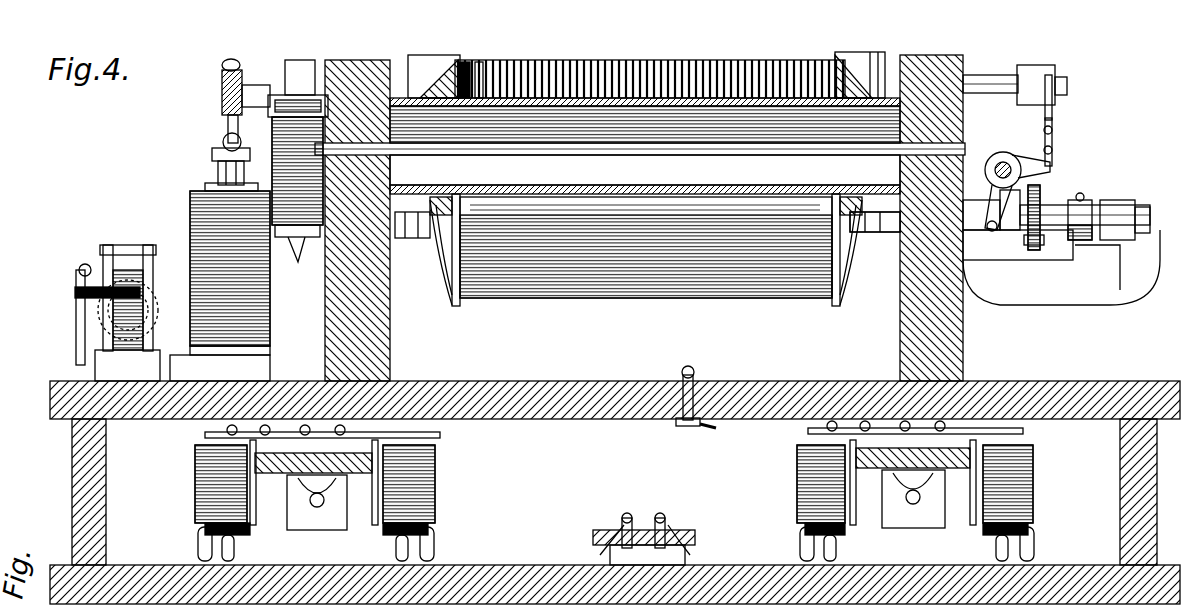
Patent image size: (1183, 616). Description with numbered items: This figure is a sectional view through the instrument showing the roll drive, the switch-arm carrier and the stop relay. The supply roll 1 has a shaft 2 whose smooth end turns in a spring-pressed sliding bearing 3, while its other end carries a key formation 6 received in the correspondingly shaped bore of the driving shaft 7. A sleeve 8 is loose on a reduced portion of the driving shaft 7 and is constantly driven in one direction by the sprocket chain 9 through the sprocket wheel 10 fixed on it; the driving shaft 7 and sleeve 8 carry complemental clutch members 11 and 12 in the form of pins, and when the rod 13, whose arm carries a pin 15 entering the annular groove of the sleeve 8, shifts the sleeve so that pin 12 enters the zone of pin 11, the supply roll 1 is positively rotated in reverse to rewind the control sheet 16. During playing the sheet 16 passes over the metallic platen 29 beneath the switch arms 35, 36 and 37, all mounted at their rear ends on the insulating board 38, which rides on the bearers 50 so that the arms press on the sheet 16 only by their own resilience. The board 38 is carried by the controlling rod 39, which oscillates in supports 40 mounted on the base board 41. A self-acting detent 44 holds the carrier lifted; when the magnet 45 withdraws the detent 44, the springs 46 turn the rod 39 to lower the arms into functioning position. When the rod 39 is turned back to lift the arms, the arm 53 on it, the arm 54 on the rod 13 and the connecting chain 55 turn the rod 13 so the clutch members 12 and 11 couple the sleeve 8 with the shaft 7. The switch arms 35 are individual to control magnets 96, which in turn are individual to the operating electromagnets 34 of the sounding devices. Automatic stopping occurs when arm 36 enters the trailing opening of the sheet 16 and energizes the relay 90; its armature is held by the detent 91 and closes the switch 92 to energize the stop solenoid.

The supply roll 1 is at (462, 304).
The shaft 2 is at (422, 240).
The bearing 3 is at (403, 240).
The key formation 6 is at (849, 246).
The driving shaft 7 is at (886, 232).
The sleeve 8 is at (991, 236).
The sprocket chain 9 is at (1042, 242).
The sprocket wheel 10 is at (1047, 210).
The clutch member 11 is at (1062, 205).
The clutch member 12 is at (1042, 236).
The rod 13 is at (1004, 167).
The pin 15 is at (1006, 234).
The control sheet 16 is at (773, 280).
The platen 29 is at (716, 190).
The operating electromagnet 34 is at (228, 125).
The switch arm 35 is at (722, 85).
The switch arm 36 is at (490, 80).
The switch arm 37 is at (468, 80).
The insulating board 38 is at (602, 82).
The controlling rod 39 is at (996, 85).
The supports 40 is at (348, 72).
The base board 41 is at (530, 374).
The detent 44 is at (278, 163).
The magnet 45 is at (288, 96).
The springs 46 is at (202, 222).
The bearers 50 is at (442, 94).
The arm 53 is at (1046, 70).
The arm 54 is at (1040, 160).
The chain 55 is at (1053, 116).
The relay 90 is at (102, 318).
The detent 91 is at (140, 236).
The switch 92 is at (82, 270).
The control magnets 96 is at (206, 500).